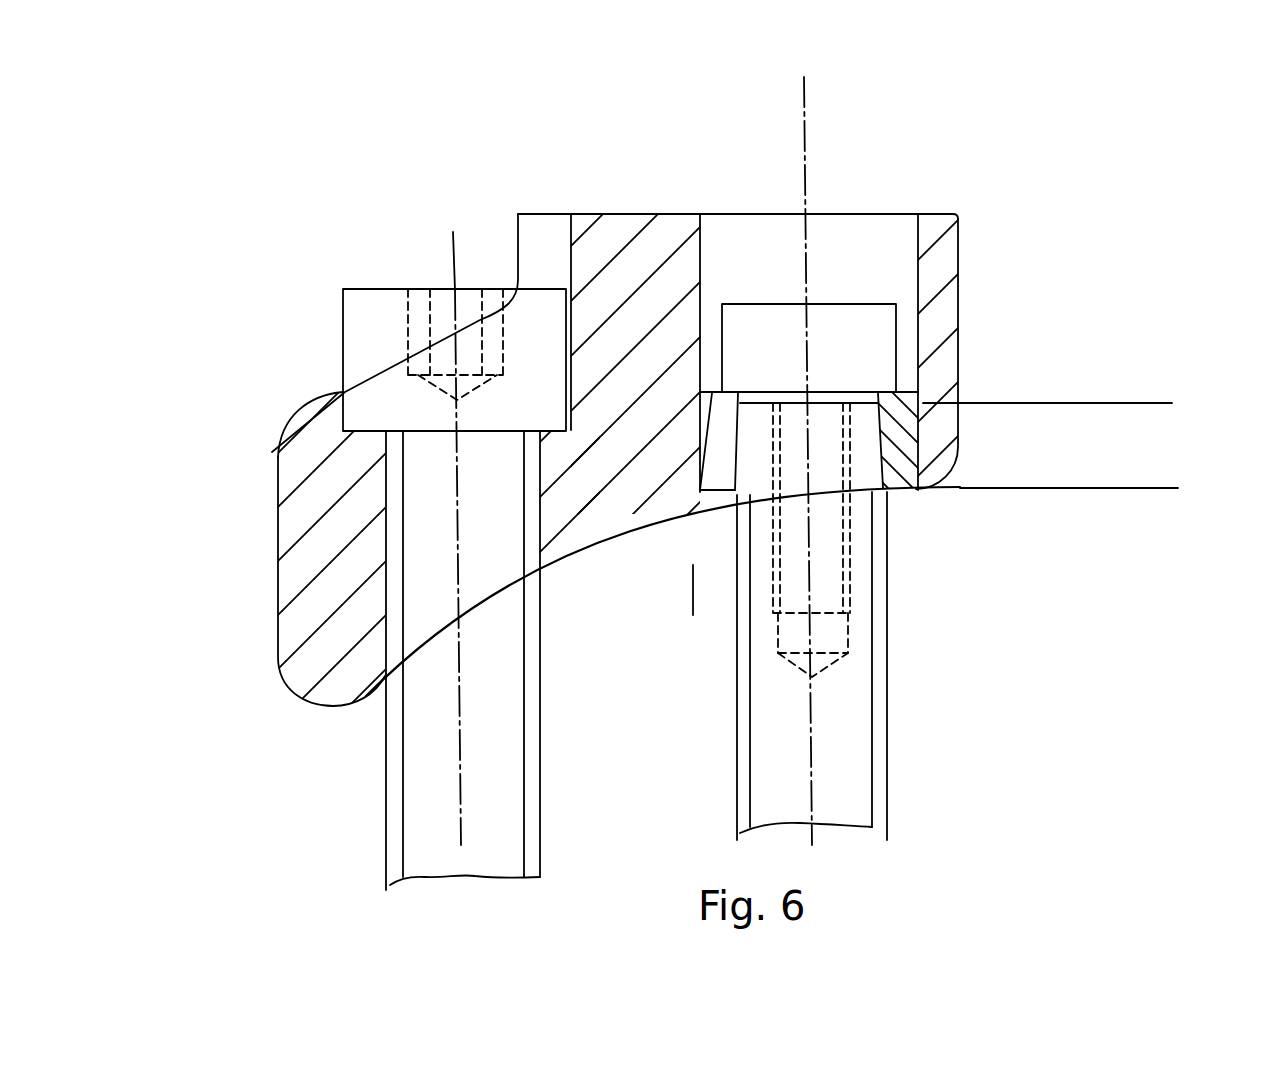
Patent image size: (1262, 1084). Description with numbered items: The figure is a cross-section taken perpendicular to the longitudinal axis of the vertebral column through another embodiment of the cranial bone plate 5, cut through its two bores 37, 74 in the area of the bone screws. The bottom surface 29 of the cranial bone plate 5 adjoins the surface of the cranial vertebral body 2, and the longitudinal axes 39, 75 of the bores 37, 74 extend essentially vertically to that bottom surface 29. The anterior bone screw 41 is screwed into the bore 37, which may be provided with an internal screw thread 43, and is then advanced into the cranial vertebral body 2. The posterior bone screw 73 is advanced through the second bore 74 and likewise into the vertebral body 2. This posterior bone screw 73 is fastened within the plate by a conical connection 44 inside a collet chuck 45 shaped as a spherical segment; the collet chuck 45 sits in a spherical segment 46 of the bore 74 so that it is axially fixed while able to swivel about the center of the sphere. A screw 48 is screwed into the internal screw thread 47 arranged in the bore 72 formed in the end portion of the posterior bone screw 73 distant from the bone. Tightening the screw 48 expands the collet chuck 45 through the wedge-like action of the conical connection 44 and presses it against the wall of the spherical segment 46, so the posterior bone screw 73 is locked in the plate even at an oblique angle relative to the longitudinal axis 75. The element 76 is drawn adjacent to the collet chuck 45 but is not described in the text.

The cranial vertebral body 2 is at (696, 616).
The cranial bone plate 5 is at (308, 670).
The bottom surface 29 is at (590, 545).
The bore 37 is at (283, 447).
The longitudinal axis 39 is at (452, 255).
The anterior bone screw 41 is at (427, 762).
The internal screw thread 43 is at (390, 553).
The conical connection 44 is at (896, 482).
The collet chuck 45 is at (913, 455).
The spherical segment 46 is at (1180, 403).
The internal screw thread 47 is at (853, 640).
The screw 48 is at (868, 337).
The bore 72 is at (828, 642).
The posterior bone screw 73 is at (845, 745).
The bore 74 is at (908, 355).
The longitudinal axis 75 is at (805, 183).
The seal element 76 is at (882, 396).